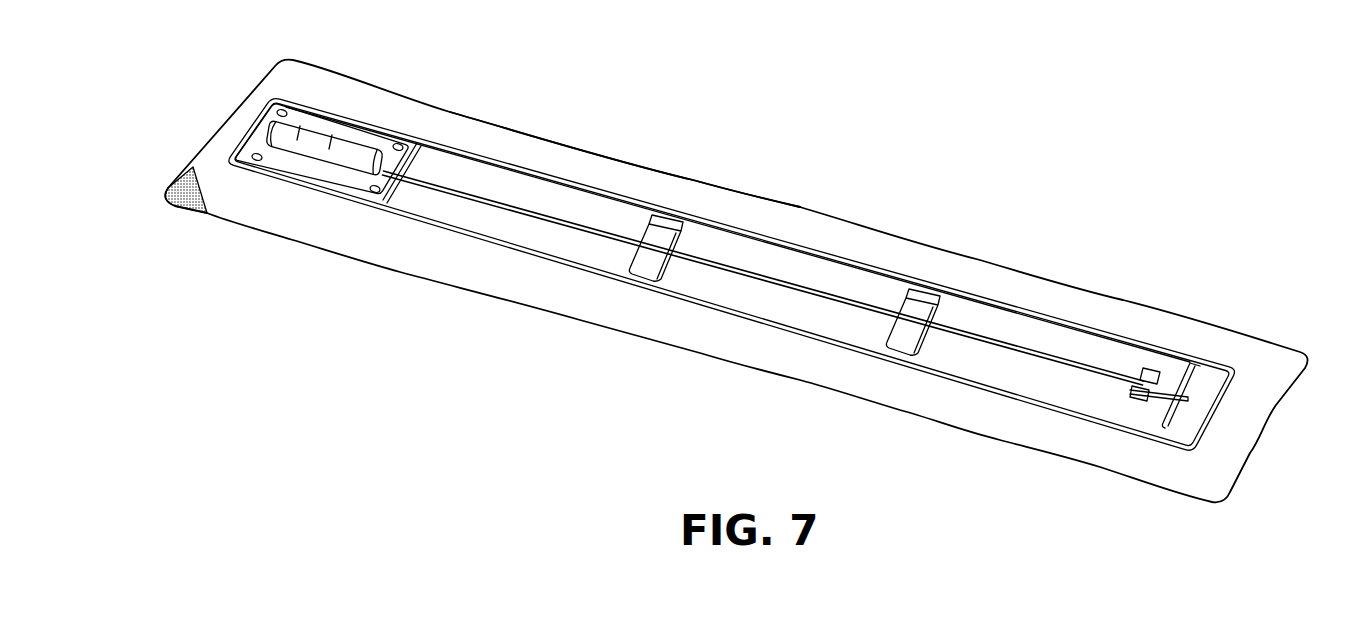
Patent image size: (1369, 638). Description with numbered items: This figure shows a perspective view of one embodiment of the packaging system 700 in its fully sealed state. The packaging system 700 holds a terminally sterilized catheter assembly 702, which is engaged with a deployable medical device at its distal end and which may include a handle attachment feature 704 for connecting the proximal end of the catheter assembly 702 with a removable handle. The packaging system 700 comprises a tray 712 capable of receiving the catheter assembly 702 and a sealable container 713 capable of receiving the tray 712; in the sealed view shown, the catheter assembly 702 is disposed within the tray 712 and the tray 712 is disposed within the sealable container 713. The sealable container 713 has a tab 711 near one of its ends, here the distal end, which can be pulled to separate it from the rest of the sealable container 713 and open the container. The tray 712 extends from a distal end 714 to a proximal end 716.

The packaging system 700 is at (813, 157).
The catheter assembly 702 is at (497, 188).
The handle attachment feature 704 is at (1147, 370).
The tab 711 is at (168, 178).
The tray 712 is at (1053, 332).
The sealable container 713 is at (631, 158).
The distal end 714 is at (246, 107).
The proximal end 716 is at (1222, 406).